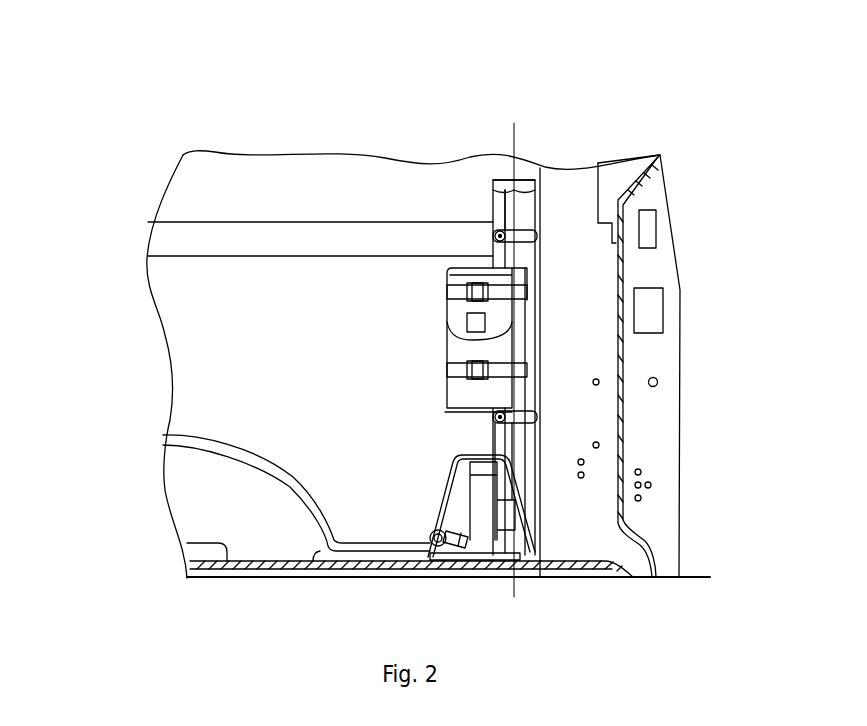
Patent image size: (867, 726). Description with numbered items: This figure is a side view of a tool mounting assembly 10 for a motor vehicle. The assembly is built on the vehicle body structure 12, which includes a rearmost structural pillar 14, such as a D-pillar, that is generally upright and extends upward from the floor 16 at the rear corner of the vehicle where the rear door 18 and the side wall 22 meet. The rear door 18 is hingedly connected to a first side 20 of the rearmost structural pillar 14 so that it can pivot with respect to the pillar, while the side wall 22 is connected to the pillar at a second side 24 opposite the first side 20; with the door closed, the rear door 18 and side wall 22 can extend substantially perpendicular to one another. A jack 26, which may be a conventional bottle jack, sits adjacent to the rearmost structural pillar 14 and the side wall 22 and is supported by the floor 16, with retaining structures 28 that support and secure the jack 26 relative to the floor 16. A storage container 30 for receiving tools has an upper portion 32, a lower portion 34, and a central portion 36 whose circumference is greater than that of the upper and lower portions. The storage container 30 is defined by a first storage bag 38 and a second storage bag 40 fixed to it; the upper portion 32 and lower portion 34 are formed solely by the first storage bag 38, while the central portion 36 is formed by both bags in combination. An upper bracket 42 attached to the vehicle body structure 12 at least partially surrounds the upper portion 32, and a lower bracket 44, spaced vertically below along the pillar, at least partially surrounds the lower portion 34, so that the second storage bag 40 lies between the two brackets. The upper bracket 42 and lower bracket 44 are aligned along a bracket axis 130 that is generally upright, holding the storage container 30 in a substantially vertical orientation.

The tool mounting assembly 10 is at (210, 182).
The vehicle body structure 12 is at (112, 241).
The rearmost structural pillar 14 is at (573, 182).
The floor 16 is at (183, 546).
The rear door 18 is at (657, 187).
The first side 20 is at (598, 272).
The side wall 22 is at (188, 343).
The second side 24 is at (537, 174).
The jack 26 is at (386, 525).
The retaining structures 28 is at (437, 497).
The storage container 30 is at (484, 169).
The upper portion 32 is at (492, 208).
The lower portion 34 is at (523, 553).
The central portion 36 is at (443, 347).
The first storage bag 38 is at (523, 437).
The second storage bag 40 is at (443, 392).
The upper bracket 42 is at (493, 235).
The lower bracket 44 is at (493, 418).
The bracket axis 130 is at (516, 137).